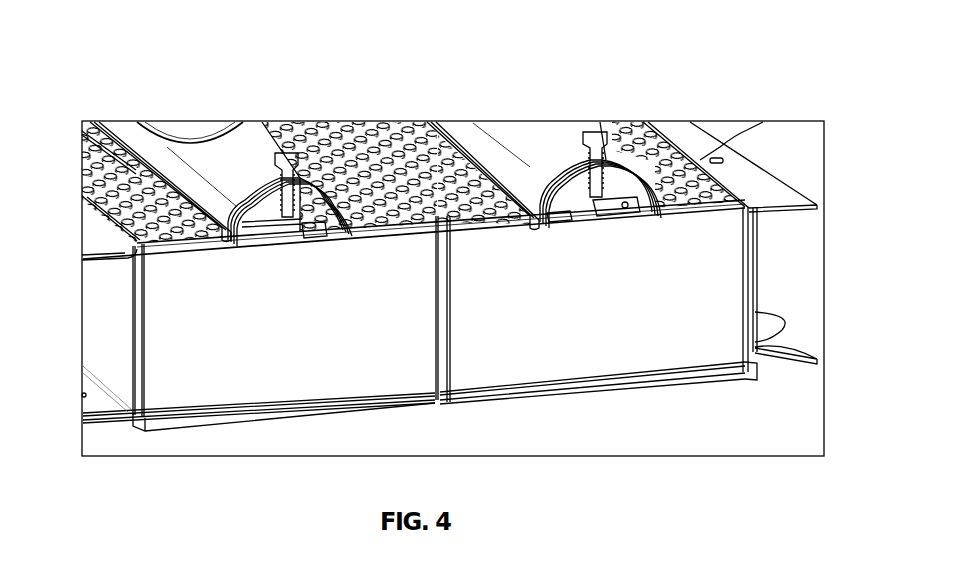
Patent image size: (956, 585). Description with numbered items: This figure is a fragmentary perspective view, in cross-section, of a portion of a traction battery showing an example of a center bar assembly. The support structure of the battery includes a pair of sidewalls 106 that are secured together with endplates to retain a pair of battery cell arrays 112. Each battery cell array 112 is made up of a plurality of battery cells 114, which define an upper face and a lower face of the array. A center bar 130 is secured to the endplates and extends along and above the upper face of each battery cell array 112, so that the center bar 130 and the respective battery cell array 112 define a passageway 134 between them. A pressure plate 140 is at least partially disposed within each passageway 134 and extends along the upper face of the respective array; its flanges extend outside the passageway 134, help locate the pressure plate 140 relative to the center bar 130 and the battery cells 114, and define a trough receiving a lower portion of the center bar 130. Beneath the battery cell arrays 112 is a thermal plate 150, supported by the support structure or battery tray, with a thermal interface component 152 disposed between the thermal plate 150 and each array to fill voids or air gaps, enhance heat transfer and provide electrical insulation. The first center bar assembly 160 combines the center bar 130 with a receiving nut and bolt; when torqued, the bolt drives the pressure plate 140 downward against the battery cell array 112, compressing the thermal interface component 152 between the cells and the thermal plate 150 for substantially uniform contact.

The sidewall 106 is at (777, 190).
The battery cell array 112 is at (82, 135).
The battery cell 114 is at (170, 393).
The center bar 130 is at (227, 160).
The passageway 134 is at (324, 199).
The pressure plate 140 is at (101, 143).
The thermal plate 150 is at (233, 420).
The thermal interface component 152 is at (307, 407).
The first center bar assembly 160 is at (304, 177).